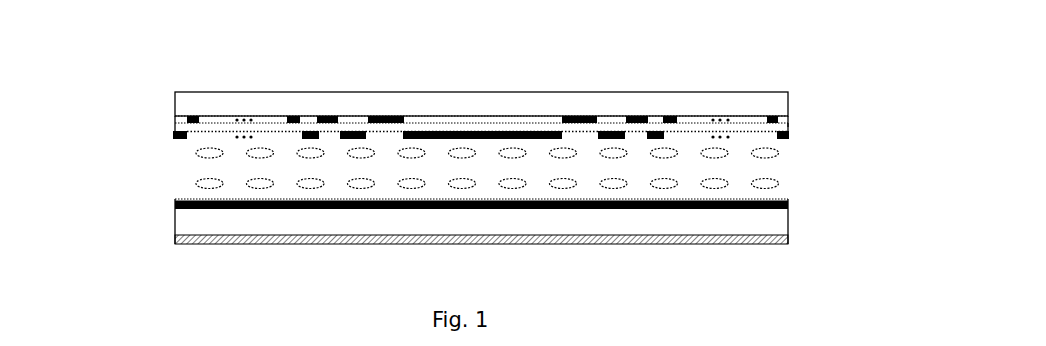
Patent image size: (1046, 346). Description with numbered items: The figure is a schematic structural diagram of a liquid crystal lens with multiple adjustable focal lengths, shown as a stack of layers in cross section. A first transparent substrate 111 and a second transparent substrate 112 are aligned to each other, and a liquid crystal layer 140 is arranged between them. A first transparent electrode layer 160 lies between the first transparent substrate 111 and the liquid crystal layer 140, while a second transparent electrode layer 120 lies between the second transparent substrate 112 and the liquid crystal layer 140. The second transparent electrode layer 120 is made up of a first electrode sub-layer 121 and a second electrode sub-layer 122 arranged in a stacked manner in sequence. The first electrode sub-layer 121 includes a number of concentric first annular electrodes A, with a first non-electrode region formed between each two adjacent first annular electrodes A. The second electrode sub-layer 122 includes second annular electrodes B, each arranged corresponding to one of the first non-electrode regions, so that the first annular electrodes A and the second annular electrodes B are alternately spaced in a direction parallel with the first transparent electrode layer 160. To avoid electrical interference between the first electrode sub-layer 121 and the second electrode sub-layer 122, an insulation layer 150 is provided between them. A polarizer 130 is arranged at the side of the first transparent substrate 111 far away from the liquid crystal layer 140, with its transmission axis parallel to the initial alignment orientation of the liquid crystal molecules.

The second transparent electrode layer 120 is at (457, 106).
The first electrode sub-layer 121 is at (445, 87).
The second electrode sub-layer 122 is at (445, 106).
The second transparent substrate 112 is at (787, 105).
The insulation layer 150 is at (787, 124).
The liquid crystal layer 140 is at (788, 167).
The first transparent electrode layer 160 is at (788, 198).
The first transparent substrate 111 is at (777, 224).
The polarizer 130 is at (788, 244).
The first annular electrodes A is at (570, 115).
The second annular electrodes B is at (607, 130).